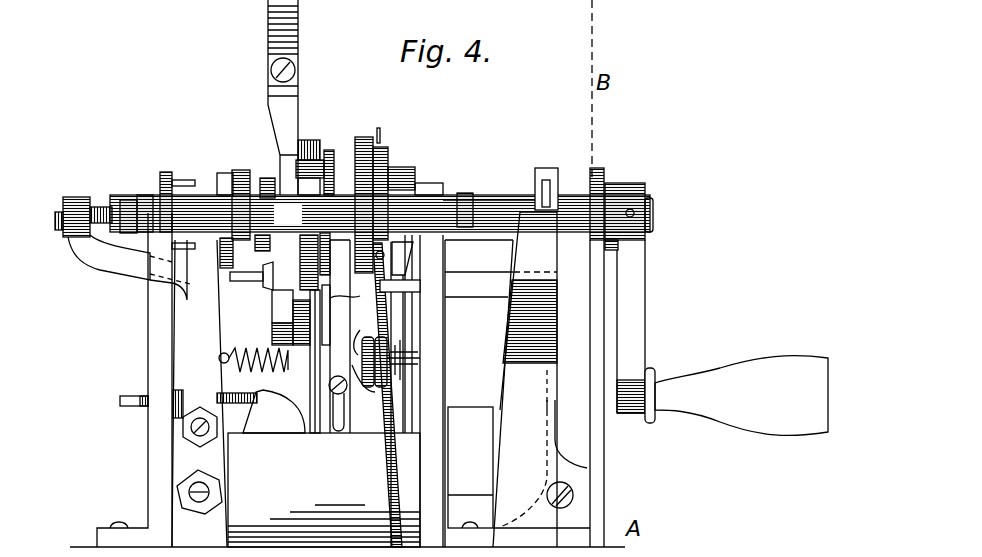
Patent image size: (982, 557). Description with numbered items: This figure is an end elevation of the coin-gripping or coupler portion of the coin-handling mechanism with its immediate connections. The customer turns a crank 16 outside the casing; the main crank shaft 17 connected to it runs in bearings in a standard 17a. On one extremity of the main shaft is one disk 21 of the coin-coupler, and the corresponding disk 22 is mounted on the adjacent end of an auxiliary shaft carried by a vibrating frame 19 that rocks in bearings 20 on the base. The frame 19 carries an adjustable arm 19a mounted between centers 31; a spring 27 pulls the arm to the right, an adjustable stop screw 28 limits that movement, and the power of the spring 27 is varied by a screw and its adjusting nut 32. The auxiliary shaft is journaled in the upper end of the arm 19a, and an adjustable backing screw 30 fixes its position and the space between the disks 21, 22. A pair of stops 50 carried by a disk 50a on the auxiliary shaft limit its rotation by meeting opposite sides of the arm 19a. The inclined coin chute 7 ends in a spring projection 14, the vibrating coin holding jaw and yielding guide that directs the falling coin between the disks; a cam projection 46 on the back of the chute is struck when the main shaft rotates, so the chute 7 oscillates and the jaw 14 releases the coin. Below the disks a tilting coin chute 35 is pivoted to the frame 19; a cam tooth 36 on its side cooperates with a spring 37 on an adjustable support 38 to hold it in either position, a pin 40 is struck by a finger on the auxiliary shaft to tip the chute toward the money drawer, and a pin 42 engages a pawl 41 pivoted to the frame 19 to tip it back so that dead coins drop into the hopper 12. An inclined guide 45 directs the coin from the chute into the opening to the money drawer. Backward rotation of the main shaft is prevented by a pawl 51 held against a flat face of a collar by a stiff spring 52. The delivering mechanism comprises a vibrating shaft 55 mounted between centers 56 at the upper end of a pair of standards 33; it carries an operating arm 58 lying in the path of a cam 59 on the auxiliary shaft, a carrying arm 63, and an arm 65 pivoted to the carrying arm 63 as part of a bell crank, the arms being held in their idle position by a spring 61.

The inclined coin chute 7 is at (297, 18).
The dead coin hopper 12 is at (470, 467).
The vibrating coin holding jaw 14 is at (275, 188).
The crank 16 is at (686, 386).
The main crank shaft 17 is at (487, 201).
The standard 17a is at (480, 295).
The vibrating frame 19 is at (297, 333).
The adjustable arm 19a is at (188, 393).
The bearings 20 is at (199, 505).
The revoluble disk 21 is at (330, 172).
The disk 22 is at (256, 192).
The spring 27 is at (255, 350).
The adjustable stop screw 28 is at (238, 394).
The adjustable backing screw 30 is at (47, 214).
The centers 31 is at (200, 436).
The adjusting nut 32 is at (370, 338).
The standards 33 is at (270, 380).
The tilting coin chute 35 is at (272, 314).
The cam tooth 36 is at (316, 327).
The spring 37 is at (310, 382).
The adjustable support 38 is at (345, 421).
The pin 40 is at (243, 281).
The pawl 41 is at (326, 302).
The pin 42 is at (350, 300).
The inclined guide 45 is at (290, 434).
The cam projection 46 is at (313, 140).
The stops 50 is at (184, 181).
The disk 50a is at (166, 173).
The pawl 51 is at (548, 168).
The stiff spring 52 is at (548, 265).
The vibrating shaft 55 is at (380, 213).
The centers 56 is at (118, 232).
The operating arm 58 is at (225, 173).
The cam 59 is at (233, 257).
The spring 61 is at (396, 455).
The carrying arm 63 is at (366, 139).
The arm 65 is at (390, 172).